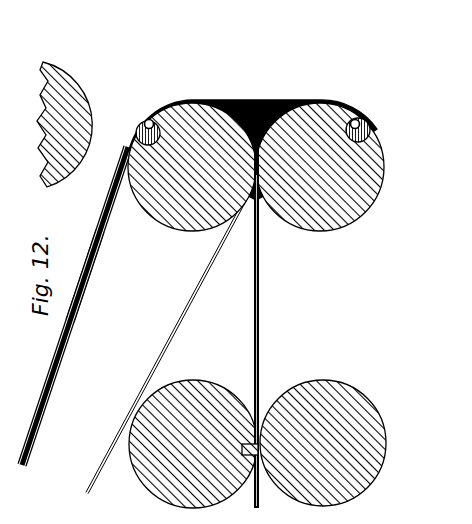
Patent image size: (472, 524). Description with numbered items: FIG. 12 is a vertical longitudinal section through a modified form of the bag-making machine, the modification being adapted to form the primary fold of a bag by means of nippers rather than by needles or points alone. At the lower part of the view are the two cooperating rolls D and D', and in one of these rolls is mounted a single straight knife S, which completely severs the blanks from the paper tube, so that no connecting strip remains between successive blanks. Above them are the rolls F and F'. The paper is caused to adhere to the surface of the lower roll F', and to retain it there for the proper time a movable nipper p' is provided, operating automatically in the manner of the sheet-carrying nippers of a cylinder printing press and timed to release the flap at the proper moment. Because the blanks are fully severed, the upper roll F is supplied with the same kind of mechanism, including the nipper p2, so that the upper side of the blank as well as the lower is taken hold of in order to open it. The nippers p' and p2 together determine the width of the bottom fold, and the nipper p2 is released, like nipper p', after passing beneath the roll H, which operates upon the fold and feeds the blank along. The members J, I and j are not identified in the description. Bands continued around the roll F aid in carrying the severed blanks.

The roll H is at (72, 95).
The nipper p2 is at (150, 112).
The nipper p' is at (358, 116).
The roll F is at (192, 186).
The roll F' is at (320, 184).
The lever bar J is at (75, 306).
The arm I is at (85, 276).
The rod j is at (172, 335).
The roll D is at (193, 431).
The roll D' is at (323, 430).
The straight knife S is at (246, 457).